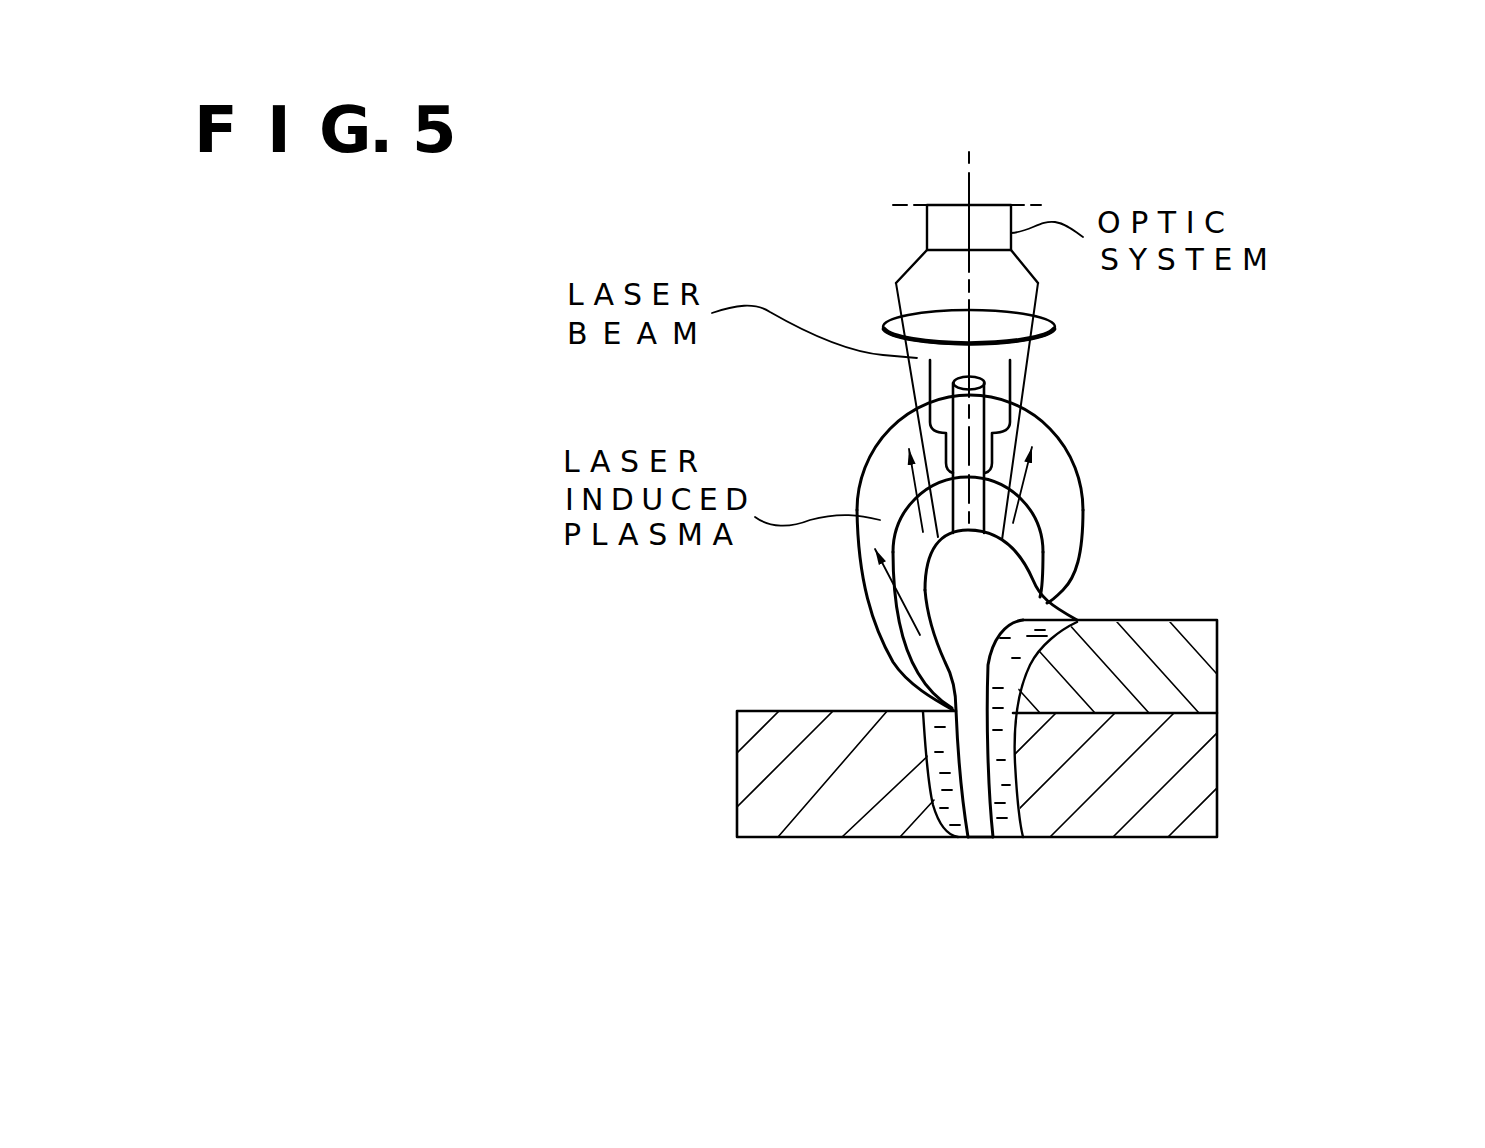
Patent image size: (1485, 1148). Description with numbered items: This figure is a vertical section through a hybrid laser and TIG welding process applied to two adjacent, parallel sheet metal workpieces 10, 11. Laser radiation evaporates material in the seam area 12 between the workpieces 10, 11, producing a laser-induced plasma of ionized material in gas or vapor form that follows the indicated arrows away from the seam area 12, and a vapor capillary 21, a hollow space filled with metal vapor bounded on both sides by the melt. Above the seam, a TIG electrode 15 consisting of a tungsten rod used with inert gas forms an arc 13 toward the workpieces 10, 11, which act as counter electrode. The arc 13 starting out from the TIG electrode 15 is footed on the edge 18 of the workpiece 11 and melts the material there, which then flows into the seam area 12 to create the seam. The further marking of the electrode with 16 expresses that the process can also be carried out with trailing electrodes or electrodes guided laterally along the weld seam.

The workpiece 10 is at (1177, 800).
The workpiece 11 is at (1180, 665).
The seam area 12 is at (987, 846).
The arc 13 is at (1008, 568).
The TIG electrode 15 is at (1199, 447).
The TIG electrode 16 is at (1172, 398).
The edge 18 is at (1045, 645).
The vapor capillary 21 is at (972, 737).